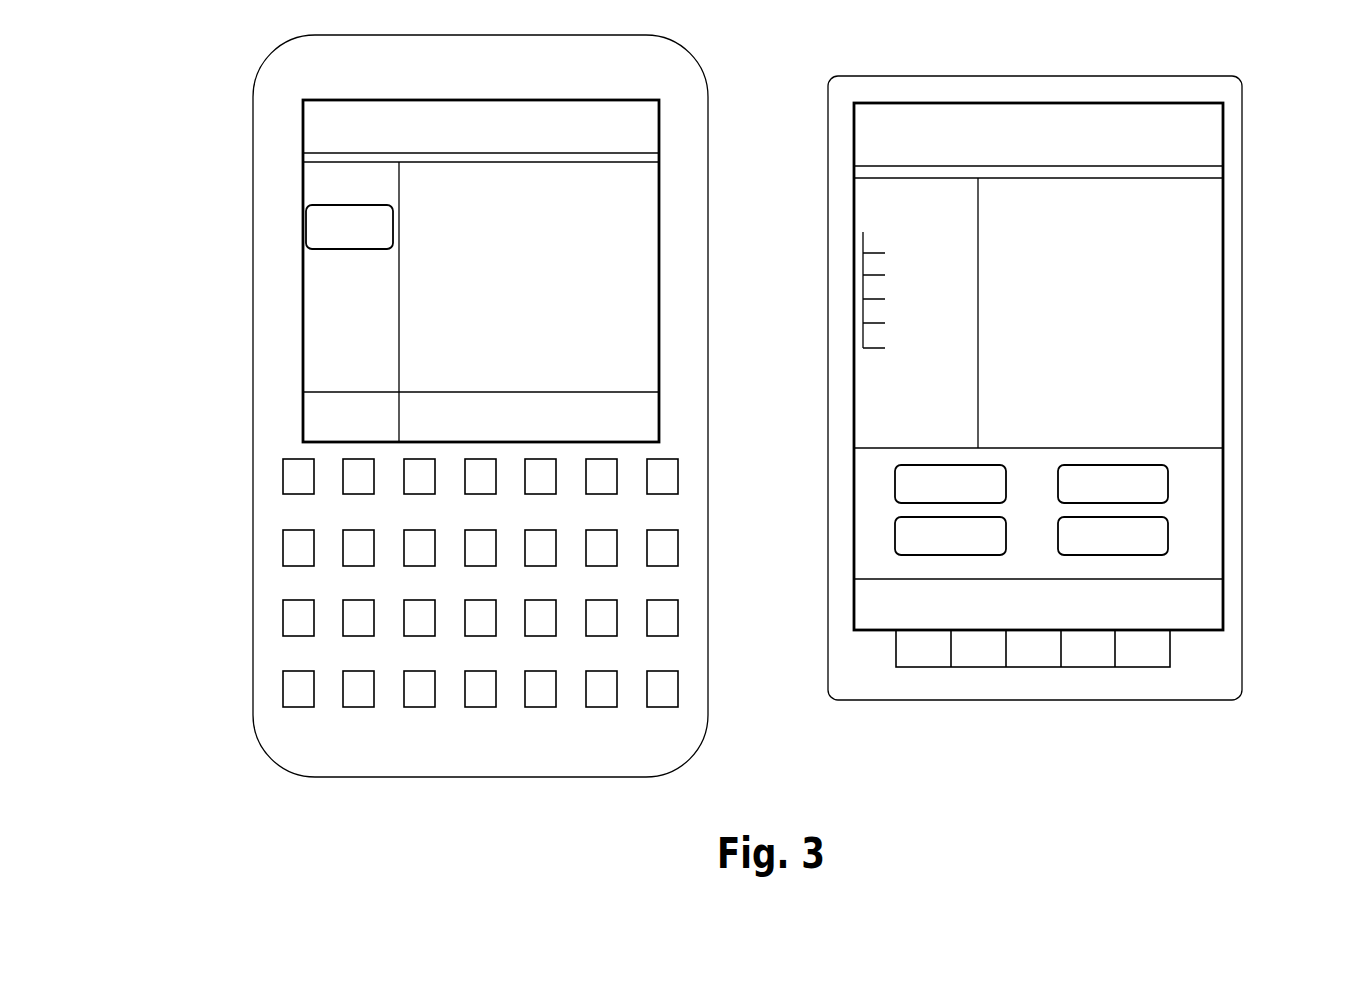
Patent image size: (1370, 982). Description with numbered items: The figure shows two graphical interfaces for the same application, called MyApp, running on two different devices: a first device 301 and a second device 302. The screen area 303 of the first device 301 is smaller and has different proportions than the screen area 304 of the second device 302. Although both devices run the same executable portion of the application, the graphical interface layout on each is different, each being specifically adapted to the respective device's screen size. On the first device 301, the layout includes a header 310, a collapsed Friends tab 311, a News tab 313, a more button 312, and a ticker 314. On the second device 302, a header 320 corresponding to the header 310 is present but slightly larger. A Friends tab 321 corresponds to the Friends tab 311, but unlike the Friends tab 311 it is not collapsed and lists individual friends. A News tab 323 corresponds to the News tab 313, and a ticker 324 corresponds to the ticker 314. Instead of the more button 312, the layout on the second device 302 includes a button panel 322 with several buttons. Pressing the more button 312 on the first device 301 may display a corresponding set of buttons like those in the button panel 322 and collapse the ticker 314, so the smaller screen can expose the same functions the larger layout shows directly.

The first device 301 is at (252, 472).
The second device 302 is at (1244, 367).
The screen area 303 is at (653, 212).
The screen area 304 is at (1223, 212).
The header 310 is at (303, 110).
The Friends tab 311 is at (317, 302).
The more button 312 is at (318, 400).
The News tab 313 is at (645, 263).
The ticker 314 is at (645, 416).
The header 320 is at (862, 143).
The Friends tab 321 is at (862, 295).
The button panel 322 is at (863, 548).
The News tab 323 is at (1203, 272).
The ticker 324 is at (1210, 600).